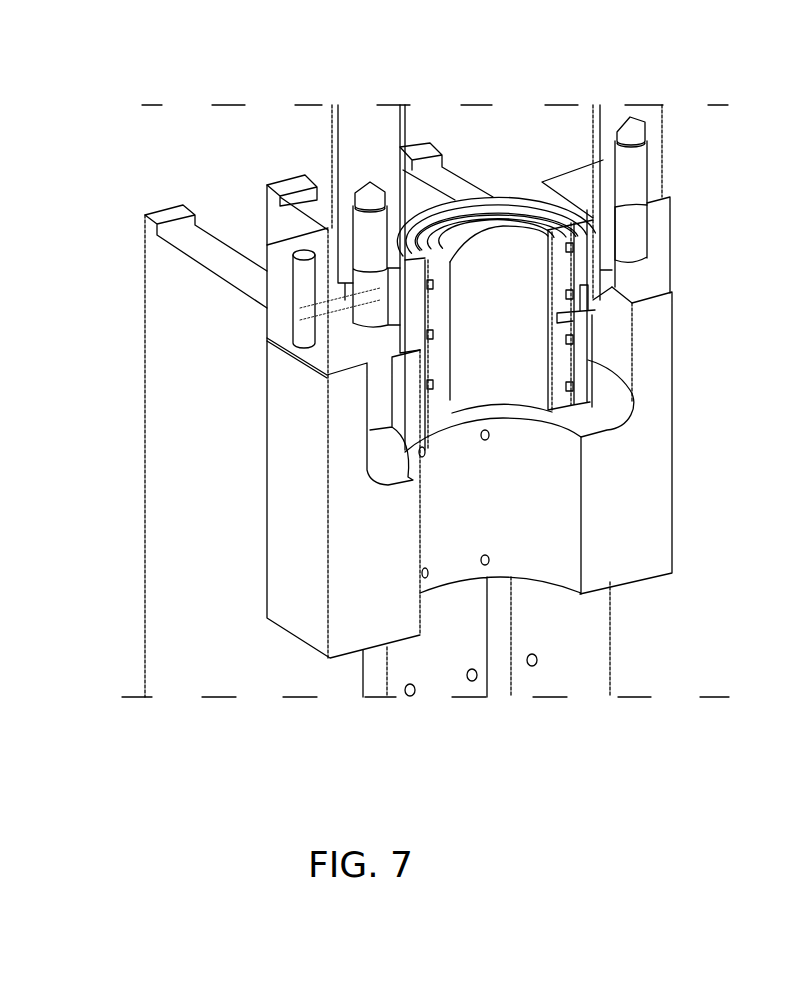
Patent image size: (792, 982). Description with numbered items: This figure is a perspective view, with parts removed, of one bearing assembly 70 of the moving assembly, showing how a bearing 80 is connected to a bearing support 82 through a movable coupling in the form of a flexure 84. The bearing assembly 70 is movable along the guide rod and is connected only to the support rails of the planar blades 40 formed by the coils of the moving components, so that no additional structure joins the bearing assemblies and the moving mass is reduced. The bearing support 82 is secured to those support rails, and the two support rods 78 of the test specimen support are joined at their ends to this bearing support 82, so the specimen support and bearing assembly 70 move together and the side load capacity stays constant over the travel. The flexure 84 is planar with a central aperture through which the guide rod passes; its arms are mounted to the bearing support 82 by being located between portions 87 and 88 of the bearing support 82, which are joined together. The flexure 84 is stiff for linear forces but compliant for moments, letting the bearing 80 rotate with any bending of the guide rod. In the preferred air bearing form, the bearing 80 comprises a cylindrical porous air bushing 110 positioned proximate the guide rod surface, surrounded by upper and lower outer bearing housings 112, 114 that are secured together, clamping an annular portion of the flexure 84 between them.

The blade 40 is at (203, 330).
The bearing assembly 70 is at (697, 348).
The support rod 78 is at (390, 127).
The bearing 80 is at (540, 203).
The bearing support 82 is at (642, 512).
The flexure 84 is at (363, 355).
The portion of bearing support 87 is at (652, 276).
The portion of bearing support 88 is at (660, 233).
The porous air bushing 110 is at (560, 363).
The upper outer bearing housing 112 is at (495, 197).
The lower outer bearing housing 114 is at (590, 360).